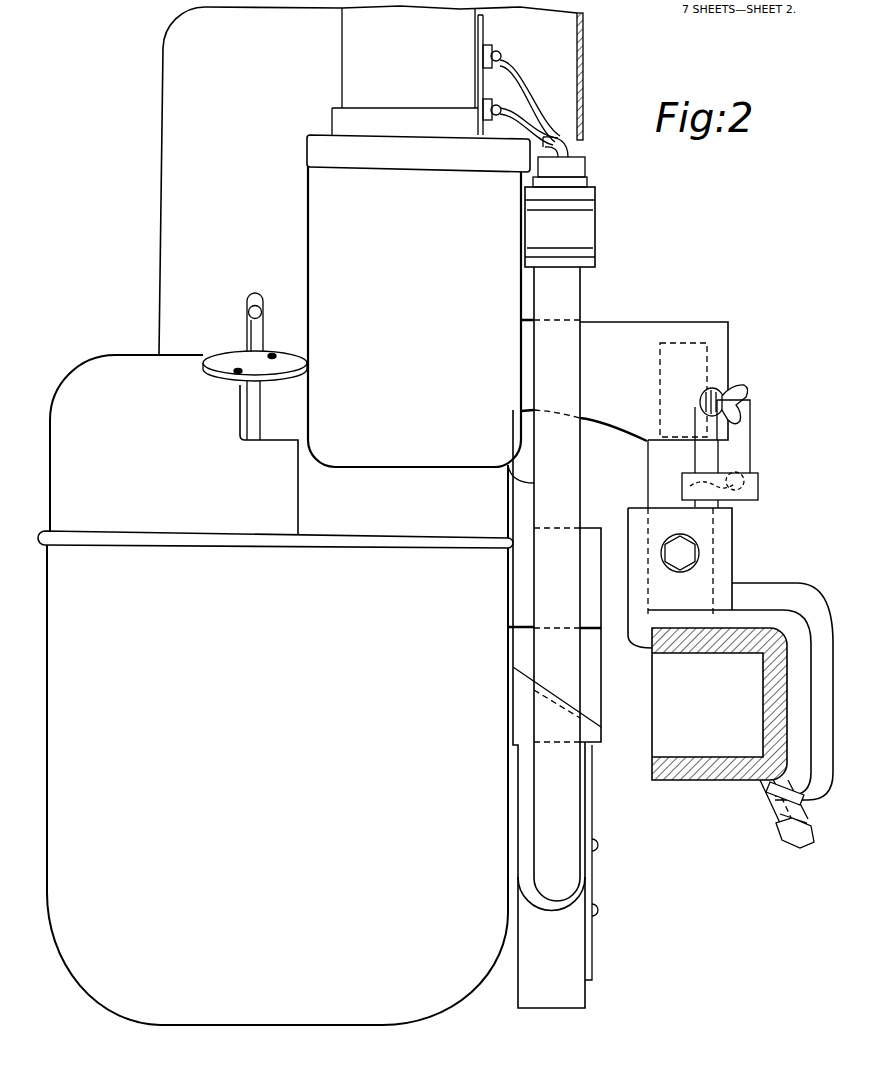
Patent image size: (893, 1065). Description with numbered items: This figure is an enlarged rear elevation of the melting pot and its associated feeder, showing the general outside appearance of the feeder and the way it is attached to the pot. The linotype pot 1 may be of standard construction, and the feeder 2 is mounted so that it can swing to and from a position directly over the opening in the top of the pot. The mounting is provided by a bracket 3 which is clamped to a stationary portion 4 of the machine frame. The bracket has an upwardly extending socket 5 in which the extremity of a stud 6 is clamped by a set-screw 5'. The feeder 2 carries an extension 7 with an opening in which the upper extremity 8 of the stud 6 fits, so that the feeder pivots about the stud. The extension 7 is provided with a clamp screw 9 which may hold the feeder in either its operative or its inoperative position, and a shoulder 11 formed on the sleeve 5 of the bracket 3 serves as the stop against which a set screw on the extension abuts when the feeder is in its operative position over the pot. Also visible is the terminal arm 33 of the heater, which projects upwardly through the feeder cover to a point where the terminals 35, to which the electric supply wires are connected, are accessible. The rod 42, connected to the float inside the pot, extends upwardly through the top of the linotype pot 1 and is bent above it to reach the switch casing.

The linotype pot 1 is at (312, 712).
The feeder 2 is at (487, 298).
The bracket 3 is at (787, 597).
The stationary portion of the frame 4 is at (720, 830).
The socket 5 is at (722, 567).
The set-screw 5' is at (733, 545).
The stud 6 is at (670, 462).
The extension 7 is at (623, 350).
The upper extremity of the stud 8 is at (707, 365).
The clamp screw 9 is at (730, 387).
The shoulder 11 is at (687, 480).
The terminal arm 33 is at (485, 36).
The terminals 35 is at (498, 110).
The rod 42 is at (253, 332).